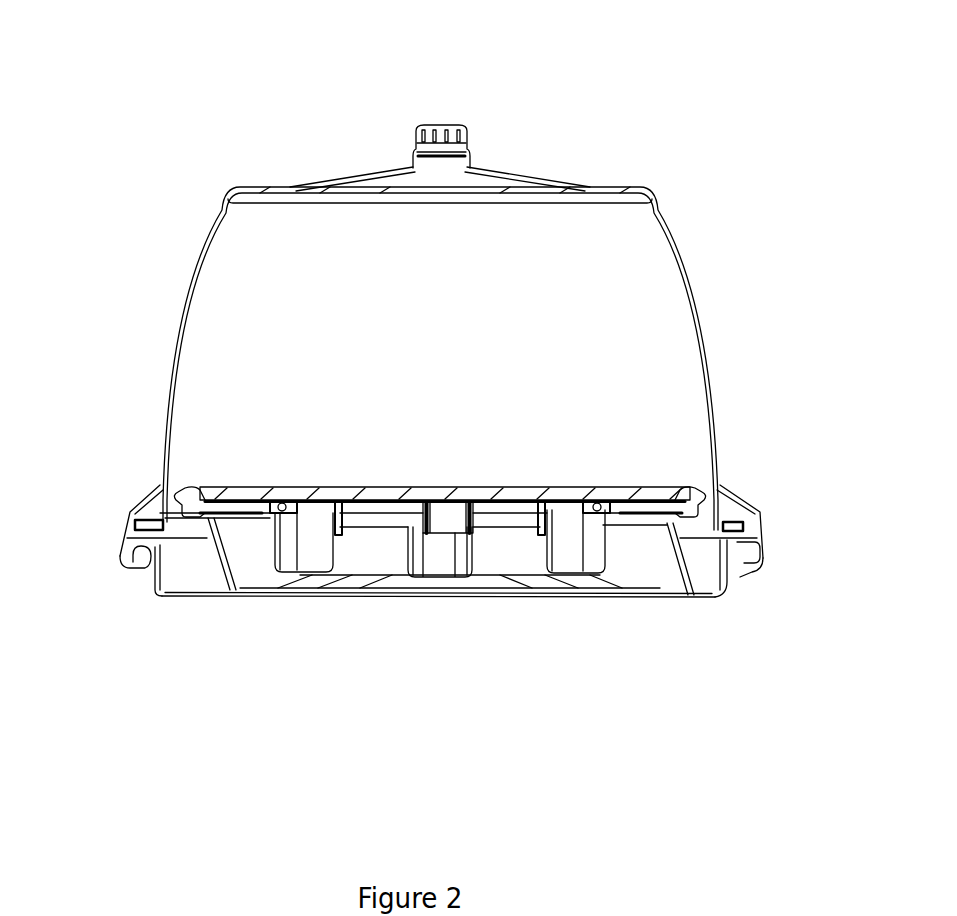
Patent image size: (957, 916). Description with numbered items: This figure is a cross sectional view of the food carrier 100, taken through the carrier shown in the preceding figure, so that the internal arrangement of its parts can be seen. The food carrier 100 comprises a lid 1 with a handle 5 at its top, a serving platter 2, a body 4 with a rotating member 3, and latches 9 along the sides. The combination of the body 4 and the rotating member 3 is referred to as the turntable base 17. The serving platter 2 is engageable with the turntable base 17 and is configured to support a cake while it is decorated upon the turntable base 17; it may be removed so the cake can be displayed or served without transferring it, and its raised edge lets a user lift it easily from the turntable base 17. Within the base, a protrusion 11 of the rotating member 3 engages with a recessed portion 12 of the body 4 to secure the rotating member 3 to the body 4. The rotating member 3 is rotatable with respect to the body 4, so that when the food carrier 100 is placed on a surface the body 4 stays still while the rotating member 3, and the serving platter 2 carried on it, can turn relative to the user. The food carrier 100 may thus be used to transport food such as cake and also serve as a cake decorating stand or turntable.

The food carrier 100 is at (205, 185).
The lid 1 is at (680, 254).
The serving platter 2 is at (662, 493).
The rotating member 3 is at (698, 528).
The body 4 is at (157, 598).
The handle 5 is at (440, 120).
The latches 9 is at (138, 502).
The protrusion 11 is at (444, 523).
The recessed portion 12 is at (440, 555).
The turntable base 17 is at (125, 512).